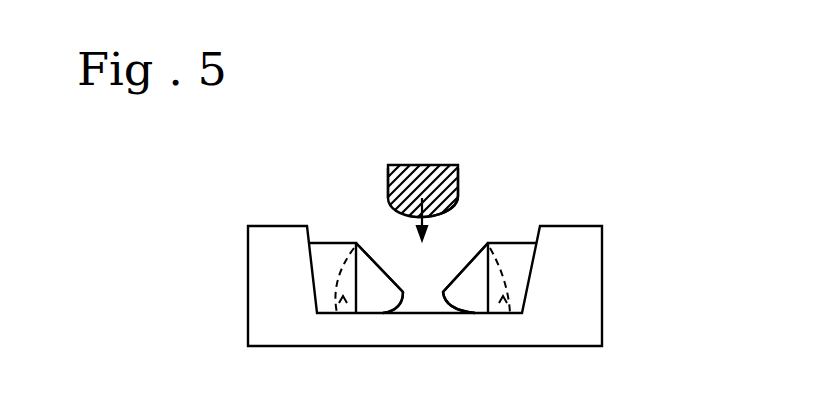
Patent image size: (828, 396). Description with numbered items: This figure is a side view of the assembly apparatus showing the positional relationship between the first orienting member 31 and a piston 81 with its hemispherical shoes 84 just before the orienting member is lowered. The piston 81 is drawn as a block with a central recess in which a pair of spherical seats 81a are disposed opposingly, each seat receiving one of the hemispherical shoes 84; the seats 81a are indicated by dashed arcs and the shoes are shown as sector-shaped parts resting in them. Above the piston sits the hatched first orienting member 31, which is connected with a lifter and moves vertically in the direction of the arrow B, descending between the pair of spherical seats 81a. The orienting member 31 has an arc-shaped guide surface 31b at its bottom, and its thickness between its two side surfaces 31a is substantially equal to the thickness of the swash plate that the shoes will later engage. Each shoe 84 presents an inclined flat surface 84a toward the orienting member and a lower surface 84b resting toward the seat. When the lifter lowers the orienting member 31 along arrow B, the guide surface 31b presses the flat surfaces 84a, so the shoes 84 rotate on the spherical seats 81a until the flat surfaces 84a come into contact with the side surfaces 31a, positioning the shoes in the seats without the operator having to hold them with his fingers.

The first orienting member 31 is at (431, 166).
The side surfaces 31a is at (388, 190).
The arc-shaped guide surface 31b is at (457, 208).
The piston 81 is at (578, 259).
The spherical seats 81a is at (337, 313).
The hemispherical shoes 84 is at (377, 267).
The flat surfaces 84a is at (390, 278).
The bottom surface of stopper 84b is at (402, 313).
The arrow B is at (423, 241).